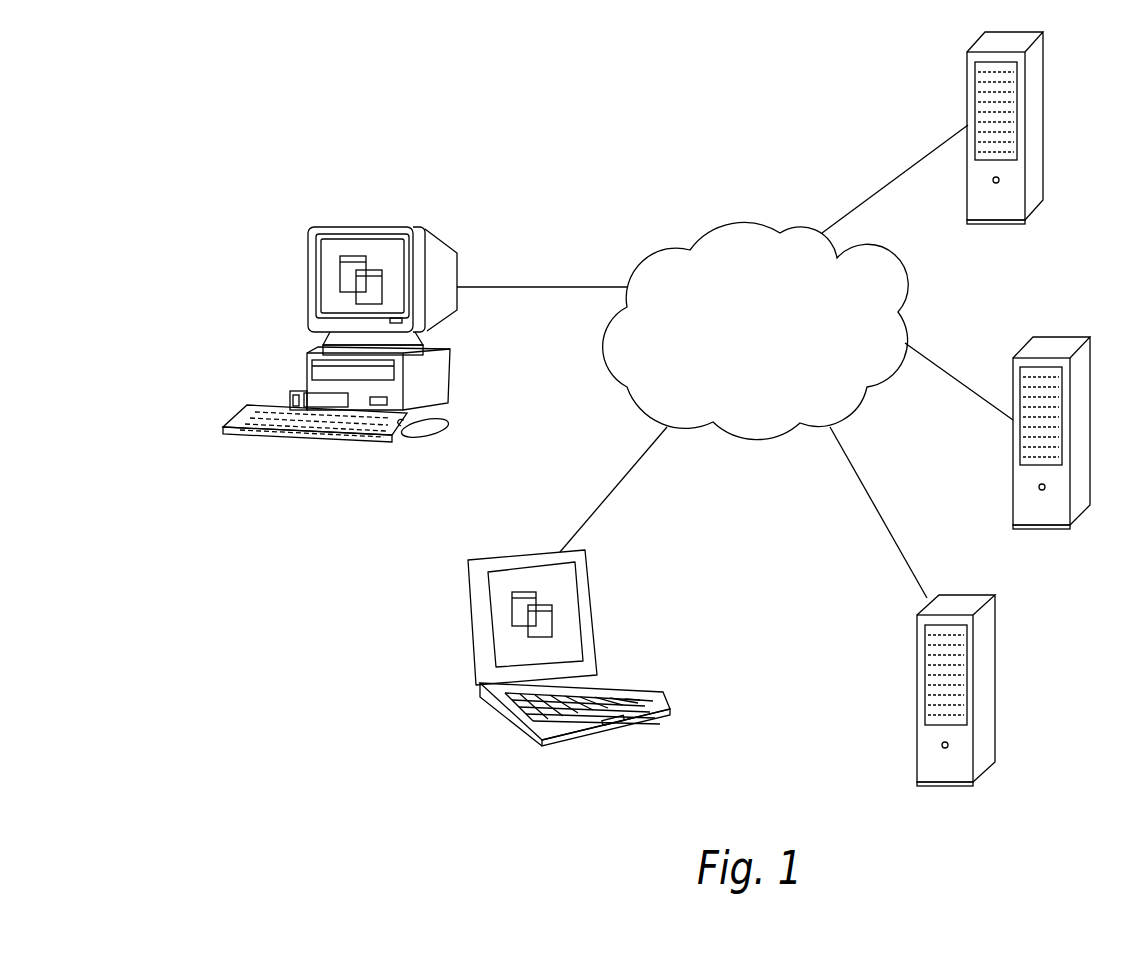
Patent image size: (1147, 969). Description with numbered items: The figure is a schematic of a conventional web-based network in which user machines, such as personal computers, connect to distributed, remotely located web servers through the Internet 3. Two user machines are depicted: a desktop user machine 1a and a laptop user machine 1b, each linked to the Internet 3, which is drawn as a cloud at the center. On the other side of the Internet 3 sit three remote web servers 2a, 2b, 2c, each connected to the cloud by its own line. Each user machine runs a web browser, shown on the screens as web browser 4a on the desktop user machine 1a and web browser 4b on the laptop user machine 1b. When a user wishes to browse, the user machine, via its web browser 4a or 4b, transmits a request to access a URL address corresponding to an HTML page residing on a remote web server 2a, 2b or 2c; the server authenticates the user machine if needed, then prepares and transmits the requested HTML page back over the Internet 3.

The user machine 1a is at (326, 376).
The user machine 1b is at (532, 717).
The remote web server 2a is at (1038, 103).
The remote web server 2b is at (1085, 408).
The remote web server 2c is at (987, 667).
The Internet 3 is at (740, 224).
The web browser 4a is at (350, 250).
The web browser 4b is at (602, 703).